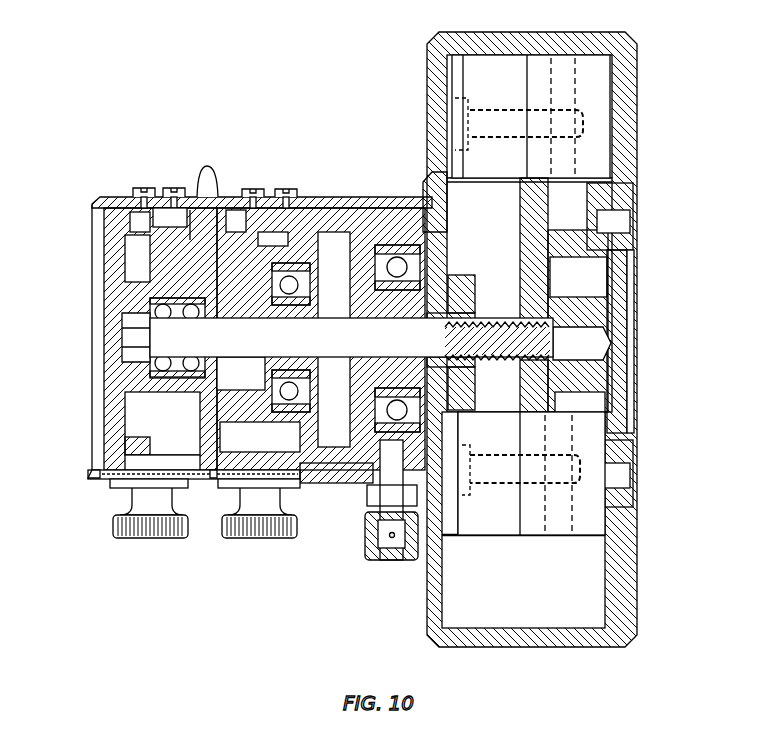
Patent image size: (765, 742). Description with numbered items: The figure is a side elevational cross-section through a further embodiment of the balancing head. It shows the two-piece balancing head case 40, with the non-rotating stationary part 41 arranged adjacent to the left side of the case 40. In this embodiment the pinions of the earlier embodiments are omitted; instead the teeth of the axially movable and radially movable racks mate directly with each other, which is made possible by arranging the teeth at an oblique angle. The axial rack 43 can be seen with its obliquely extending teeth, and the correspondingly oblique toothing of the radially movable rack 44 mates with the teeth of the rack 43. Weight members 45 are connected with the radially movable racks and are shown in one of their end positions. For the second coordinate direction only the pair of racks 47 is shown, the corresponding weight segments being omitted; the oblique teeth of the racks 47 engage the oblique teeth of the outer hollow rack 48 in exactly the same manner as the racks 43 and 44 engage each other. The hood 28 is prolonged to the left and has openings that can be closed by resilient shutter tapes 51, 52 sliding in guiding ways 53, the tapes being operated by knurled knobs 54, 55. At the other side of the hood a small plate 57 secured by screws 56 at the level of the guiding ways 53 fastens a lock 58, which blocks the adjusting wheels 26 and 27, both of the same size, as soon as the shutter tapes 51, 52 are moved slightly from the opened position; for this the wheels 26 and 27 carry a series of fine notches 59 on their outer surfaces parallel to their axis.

The balancing head case 40 is at (645, 116).
The weight members 45 is at (506, 95).
The pair of racks 47 is at (468, 377).
The radially movable rack 44 is at (556, 264).
The axial rack 43 is at (560, 356).
The fine notches 59 is at (120, 211).
The adjusting wheel 27 is at (117, 244).
The hood 28 is at (328, 196).
The outer hollow rack 48 is at (343, 316).
The adjusting wheel 26 is at (351, 306).
The resilient shutter tape 51 is at (130, 485).
The resilient shutter tape 52 is at (300, 484).
The knurled knob 54 is at (138, 541).
The knurled knob 55 is at (243, 539).
The non-rotating stationary part 41 is at (224, 543).
The screws 56 is at (180, 188).
The guiding ways 53 is at (123, 196).
The lock 58 is at (154, 222).
The small plate 57 is at (190, 215).